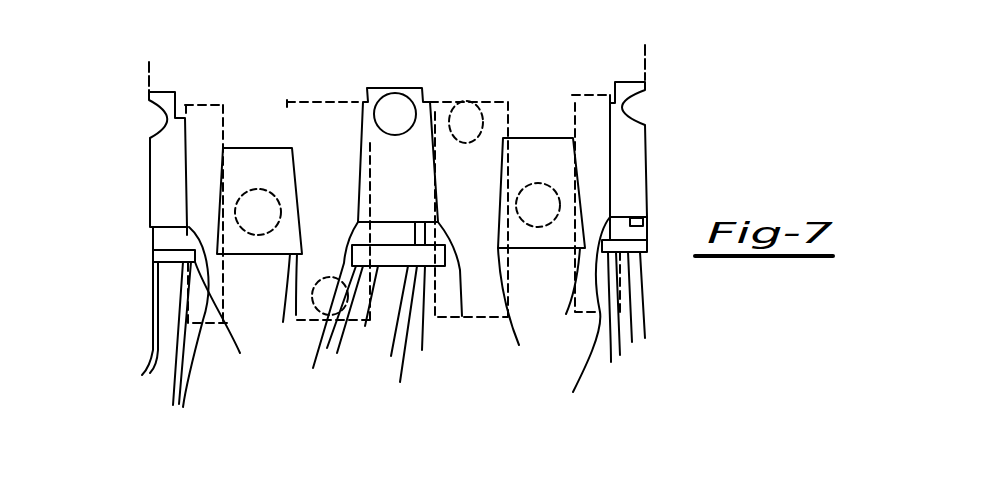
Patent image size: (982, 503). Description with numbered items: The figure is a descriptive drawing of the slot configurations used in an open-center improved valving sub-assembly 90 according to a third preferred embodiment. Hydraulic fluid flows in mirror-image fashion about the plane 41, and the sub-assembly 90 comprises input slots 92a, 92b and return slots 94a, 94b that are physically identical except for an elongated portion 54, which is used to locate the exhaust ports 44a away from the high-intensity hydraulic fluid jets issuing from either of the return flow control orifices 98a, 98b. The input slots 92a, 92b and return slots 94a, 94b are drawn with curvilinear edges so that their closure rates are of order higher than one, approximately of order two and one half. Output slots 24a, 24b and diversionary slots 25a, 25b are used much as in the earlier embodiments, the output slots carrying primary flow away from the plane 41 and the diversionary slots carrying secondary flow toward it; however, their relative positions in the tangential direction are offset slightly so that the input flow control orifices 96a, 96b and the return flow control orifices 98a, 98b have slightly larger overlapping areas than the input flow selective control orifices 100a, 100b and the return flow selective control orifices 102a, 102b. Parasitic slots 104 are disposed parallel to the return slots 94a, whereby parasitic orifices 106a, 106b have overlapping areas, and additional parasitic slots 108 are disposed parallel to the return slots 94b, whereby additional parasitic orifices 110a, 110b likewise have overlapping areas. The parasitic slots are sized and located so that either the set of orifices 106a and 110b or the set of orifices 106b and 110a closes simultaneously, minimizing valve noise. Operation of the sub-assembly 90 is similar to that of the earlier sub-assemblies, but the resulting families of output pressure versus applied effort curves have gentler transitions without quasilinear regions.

The open-center improved valving sub-assembly 90 is at (672, 92).
The elongated portion 54 is at (418, 85).
The exhaust port 44a is at (370, 100).
The input slot 92a is at (255, 147).
The input slot 92b is at (536, 136).
The first output slot 24a is at (317, 100).
The second output slot 24b is at (490, 318).
The first diversionary slot 25a is at (193, 105).
The second diversionary slot 25b is at (588, 94).
The return slot 94a is at (411, 340).
The return slot 94b is at (165, 232).
The input flow control orifice 96a is at (291, 306).
The input flow control orifice 96b is at (524, 315).
The return flow control orifice 98a is at (327, 315).
The return flow control orifice 98b is at (460, 287).
The input flow selective control orifice 100a is at (236, 323).
The input flow selective control orifice 100b is at (565, 298).
The return flow selective control orifice 102a is at (216, 320).
The return flow selective control orifice 102b is at (580, 319).
The parasitic slot 104 is at (375, 310).
The parasitic orifice 106a is at (350, 324).
The parasitic orifice 106b is at (443, 322).
The additional parasitic slot 108 is at (376, 325).
The additional parasitic orifice 110a is at (183, 353).
The additional parasitic orifice 110b is at (610, 323).
The plane 41 is at (147, 287).